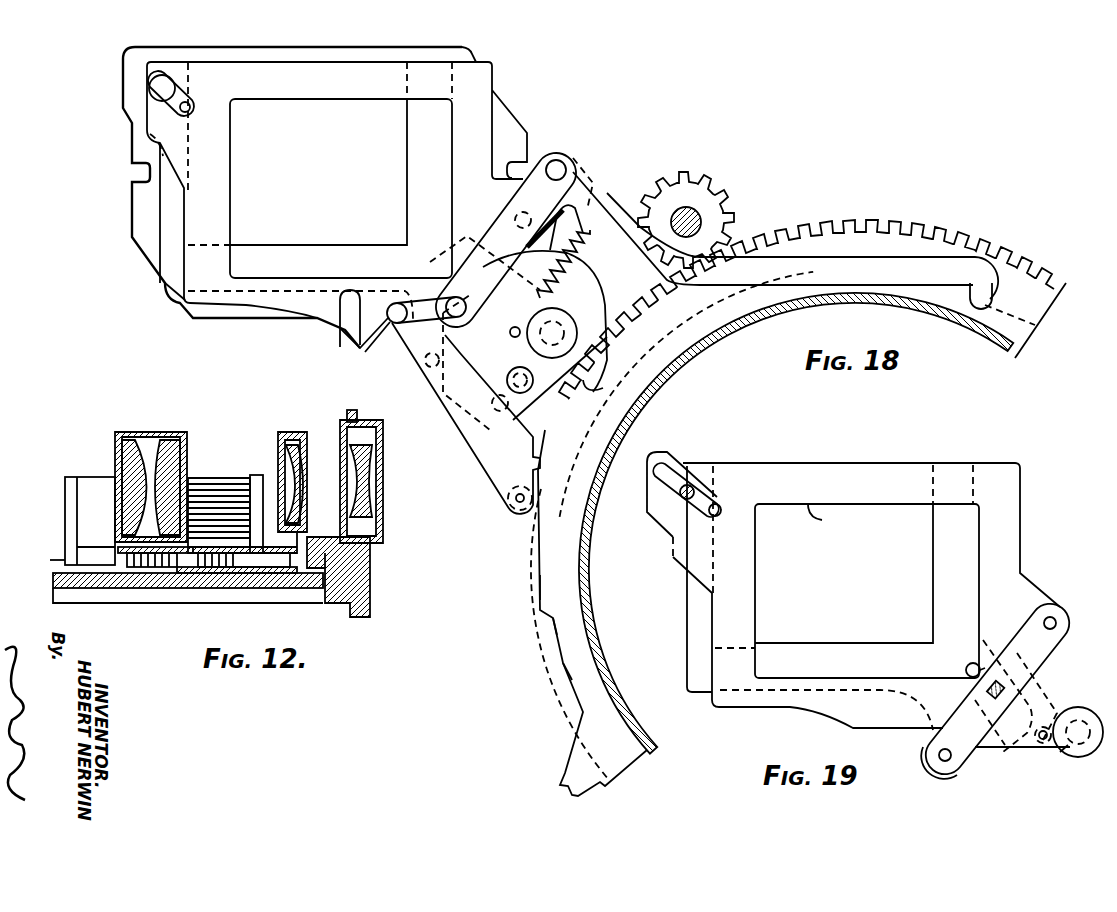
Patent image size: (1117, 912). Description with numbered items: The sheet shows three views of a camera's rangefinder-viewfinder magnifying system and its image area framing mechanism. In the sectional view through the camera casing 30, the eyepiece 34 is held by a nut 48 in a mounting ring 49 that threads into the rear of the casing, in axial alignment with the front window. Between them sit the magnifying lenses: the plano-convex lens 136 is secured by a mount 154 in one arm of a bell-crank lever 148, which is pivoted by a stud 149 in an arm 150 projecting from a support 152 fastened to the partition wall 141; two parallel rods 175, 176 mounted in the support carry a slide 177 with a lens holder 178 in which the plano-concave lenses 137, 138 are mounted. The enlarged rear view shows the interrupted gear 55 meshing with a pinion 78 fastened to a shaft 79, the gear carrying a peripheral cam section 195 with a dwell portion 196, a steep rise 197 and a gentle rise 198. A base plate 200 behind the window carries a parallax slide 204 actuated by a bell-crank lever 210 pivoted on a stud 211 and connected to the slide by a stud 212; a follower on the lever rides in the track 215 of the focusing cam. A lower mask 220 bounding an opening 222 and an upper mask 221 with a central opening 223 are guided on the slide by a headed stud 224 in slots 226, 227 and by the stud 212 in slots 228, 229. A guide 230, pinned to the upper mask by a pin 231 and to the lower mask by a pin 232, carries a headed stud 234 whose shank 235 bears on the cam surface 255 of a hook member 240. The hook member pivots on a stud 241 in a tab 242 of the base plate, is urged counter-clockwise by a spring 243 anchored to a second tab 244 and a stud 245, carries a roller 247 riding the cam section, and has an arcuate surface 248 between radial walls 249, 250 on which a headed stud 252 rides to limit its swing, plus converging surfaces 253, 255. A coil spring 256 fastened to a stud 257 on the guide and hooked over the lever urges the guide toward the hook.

In FIG. 18, the base plate 200 is at (156, 257).
In FIG. 18, the parallax slide 204 is at (176, 302).
In FIG. 18, the bell-crank lever 210 is at (823, 266).
In FIG. 18, the stud 211 is at (566, 172).
In FIG. 19, the stud 212 is at (985, 690).
In FIG. 18, the track 215 is at (1035, 325).
In FIG. 18, the lower mask 220 is at (313, 258).
In FIG. 19, the lower mask 220 is at (698, 682).
In FIG. 18, the upper mask 221 is at (488, 83).
In FIG. 19, the upper mask 221 is at (1008, 532).
In FIG. 19, the rectangular opening 222 is at (845, 645).
In FIG. 19, the central rectangular opening 223 is at (835, 519).
In FIG. 18, the headed stud 224 is at (170, 88).
In FIG. 19, the headed stud 224 is at (692, 488).
In FIG. 18, the slot 226 is at (140, 70).
In FIG. 19, the slot 226 is at (650, 480).
In FIG. 18, the slot 227 is at (188, 104).
In FIG. 19, the slot 227 is at (716, 507).
In FIG. 19, the slot 228 is at (969, 664).
In FIG. 19, the slot 229 is at (1021, 706).
In FIG. 18, the guide 230 is at (514, 240).
In FIG. 19, the guide 230 is at (1052, 655).
In FIG. 18, the pin 231 is at (512, 212).
In FIG. 19, the pin 231 is at (1057, 623).
In FIG. 18, the pin 232 is at (432, 380).
In FIG. 19, the pin 232 is at (938, 756).
In FIG. 18, the headed stud 234 is at (597, 352).
In FIG. 19, the headed stud 234 is at (1080, 708).
In FIG. 18, the shank 235 is at (596, 303).
In FIG. 19, the shank 235 is at (1065, 752).
In FIG. 18, the hook member 240 is at (483, 463).
In FIG. 18, the stud 241 is at (364, 342).
In FIG. 18, the tab 242 is at (400, 360).
In FIG. 18, the spring 243 is at (422, 300).
In FIG. 18, the second tab 244 is at (340, 310).
In FIG. 18, the stud 245 is at (482, 333).
In FIG. 18, the roller 247 is at (508, 504).
In FIG. 18, the arcuate surface 248 is at (493, 404).
In FIG. 18, the radial wall 249 is at (575, 438).
In FIG. 18, the radial wall 250 is at (505, 388).
In FIG. 18, the headed stud 252 is at (509, 378).
In FIG. 18, the converging surface 253 is at (560, 367).
In FIG. 18, the cam surface 255 is at (603, 390).
In FIG. 18, the coil spring 256 is at (598, 222).
In FIG. 18, the stud 257 is at (508, 345).
In FIG. 19, the stud 257 is at (1033, 749).
In FIG. 18, the interrupted gear 55 is at (893, 232).
In FIG. 18, the pinion 78 is at (714, 190).
In FIG. 18, the shaft 79 is at (702, 206).
In FIG. 18, the peripheral cam section 195 is at (540, 585).
In FIG. 18, the dwell portion 196 is at (563, 665).
In FIG. 18, the steep rise 197 is at (548, 620).
In FIG. 18, the gentle rise 198 is at (538, 536).
In FIG. 12, the camera casing 30 is at (367, 580).
In FIG. 12, the eyepiece 34 is at (372, 472).
In FIG. 12, the nut 48 is at (345, 455).
In FIG. 12, the mounting ring 49 is at (372, 428).
In FIG. 12, the plano-convex lens 136 is at (302, 468).
In FIG. 12, the plano-concave lens 137 is at (130, 440).
In FIG. 12, the plano-concave lens 138 is at (170, 440).
In FIG. 12, the partition wall 141 is at (53, 584).
In FIG. 12, the bell-crank lever 148 is at (123, 552).
In FIG. 12, the stud 149 is at (120, 547).
In FIG. 12, the arm 150 is at (147, 567).
In FIG. 12, the support 152 is at (65, 537).
In FIG. 12, the mount 154 is at (295, 432).
In FIG. 12, the rod 175 is at (202, 490).
In FIG. 12, the rod 176 is at (228, 523).
In FIG. 12, the slide 177 is at (88, 490).
In FIG. 12, the lens holder 178 is at (122, 433).